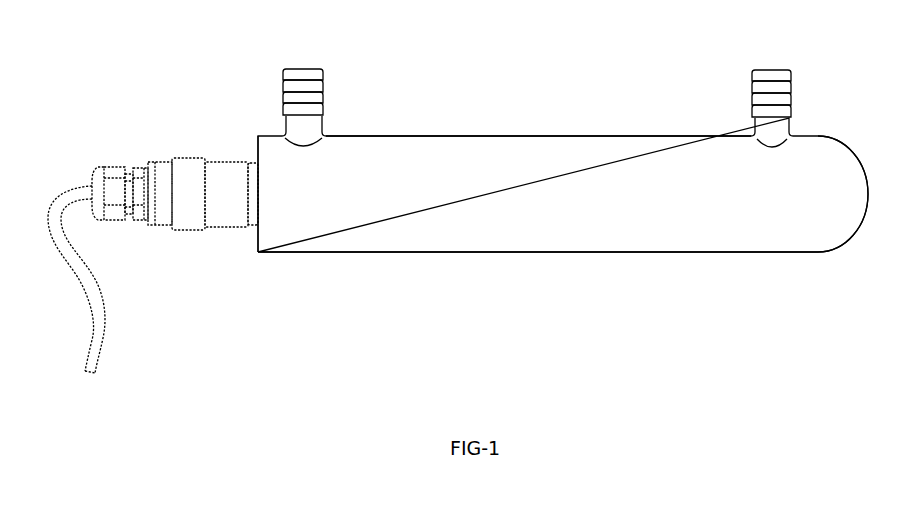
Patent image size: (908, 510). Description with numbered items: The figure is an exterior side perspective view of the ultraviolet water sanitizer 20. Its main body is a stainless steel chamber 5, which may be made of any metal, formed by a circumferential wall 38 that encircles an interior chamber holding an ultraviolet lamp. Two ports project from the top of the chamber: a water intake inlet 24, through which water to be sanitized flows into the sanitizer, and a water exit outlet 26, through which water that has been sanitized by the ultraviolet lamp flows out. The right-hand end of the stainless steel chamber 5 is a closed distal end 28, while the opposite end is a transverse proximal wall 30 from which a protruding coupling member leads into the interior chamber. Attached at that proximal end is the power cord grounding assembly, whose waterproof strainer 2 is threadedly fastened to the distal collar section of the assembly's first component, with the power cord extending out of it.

The waterproof strainer 2 is at (115, 166).
The stainless steel chamber 5 is at (535, 261).
The ultraviolet water sanitizer 20 is at (492, 128).
The water intake inlet 24 is at (300, 67).
The water exit outlet 26 is at (774, 56).
The closed distal end 28 is at (852, 148).
The proximal wall 30 is at (258, 152).
The circumferential wall 38 is at (609, 150).